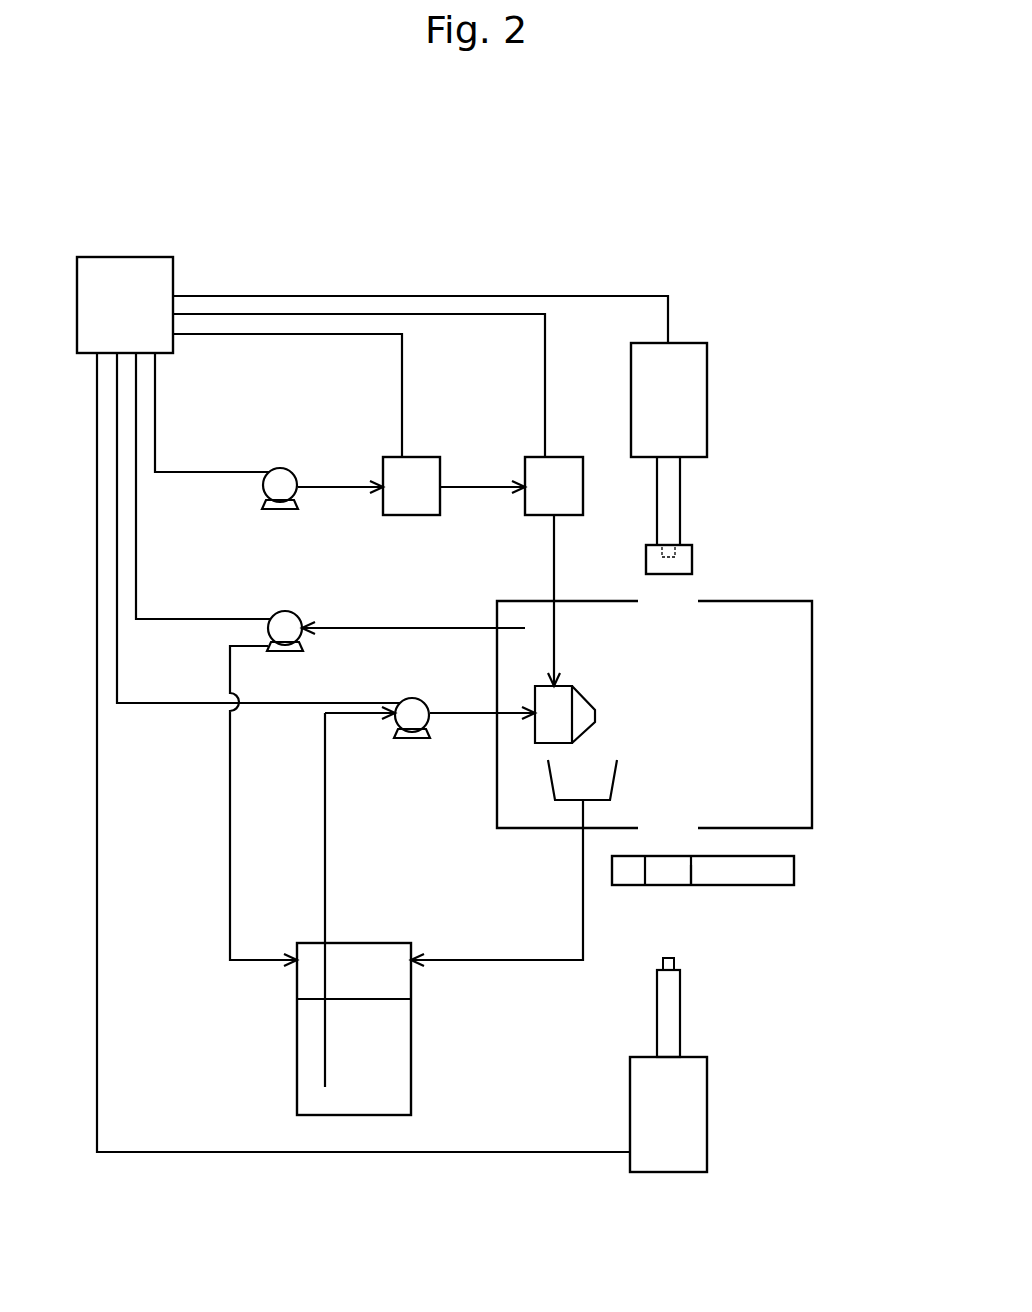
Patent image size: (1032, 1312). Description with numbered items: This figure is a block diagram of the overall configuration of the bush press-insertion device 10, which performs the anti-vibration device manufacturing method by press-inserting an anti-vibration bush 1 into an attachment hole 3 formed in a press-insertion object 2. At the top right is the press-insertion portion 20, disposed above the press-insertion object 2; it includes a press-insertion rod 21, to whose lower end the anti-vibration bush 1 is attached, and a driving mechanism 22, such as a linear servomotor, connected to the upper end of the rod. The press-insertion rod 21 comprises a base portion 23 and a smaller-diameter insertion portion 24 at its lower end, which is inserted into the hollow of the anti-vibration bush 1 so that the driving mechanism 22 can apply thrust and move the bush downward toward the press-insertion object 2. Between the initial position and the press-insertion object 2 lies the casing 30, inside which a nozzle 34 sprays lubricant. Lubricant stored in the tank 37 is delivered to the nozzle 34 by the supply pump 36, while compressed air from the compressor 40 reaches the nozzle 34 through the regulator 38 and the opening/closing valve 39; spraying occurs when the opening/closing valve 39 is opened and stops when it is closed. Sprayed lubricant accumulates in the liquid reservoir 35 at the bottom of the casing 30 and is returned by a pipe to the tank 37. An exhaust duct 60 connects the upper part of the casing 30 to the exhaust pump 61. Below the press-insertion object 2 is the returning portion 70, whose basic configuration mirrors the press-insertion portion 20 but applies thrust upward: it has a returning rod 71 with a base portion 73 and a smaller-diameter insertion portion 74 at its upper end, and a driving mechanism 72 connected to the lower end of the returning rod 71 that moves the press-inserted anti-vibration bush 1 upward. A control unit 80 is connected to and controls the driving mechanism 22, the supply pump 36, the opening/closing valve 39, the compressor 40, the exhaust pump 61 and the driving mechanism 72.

The bush press-insertion device 10 is at (450, 202).
The control unit 80 is at (165, 273).
The press-insertion portion 20 is at (695, 422).
The press-insertion rod 21 is at (682, 507).
The driving mechanism 22 is at (677, 421).
The base portion 23 is at (670, 502).
The insertion portion 24 is at (676, 550).
The anti-vibration bush 1 is at (646, 557).
The casing 30 is at (796, 598).
The nozzle 34 is at (580, 690).
The liquid reservoir 35 is at (548, 780).
The supply pump 36 is at (409, 698).
The tank 37 is at (383, 942).
The regulator 38 is at (423, 456).
The opening/closing valve 39 is at (566, 456).
The compressor 40 is at (279, 469).
The exhaust duct 60 is at (418, 627).
The exhaust pump 61 is at (288, 611).
The press-insertion object 2 is at (787, 873).
The attachment hole 3 is at (690, 876).
The returning portion 70 is at (692, 1094).
The returning rod 71 is at (672, 1009).
The driving mechanism 72 is at (672, 1093).
The base portion 73 is at (667, 1012).
The insertion portion 74 is at (676, 966).